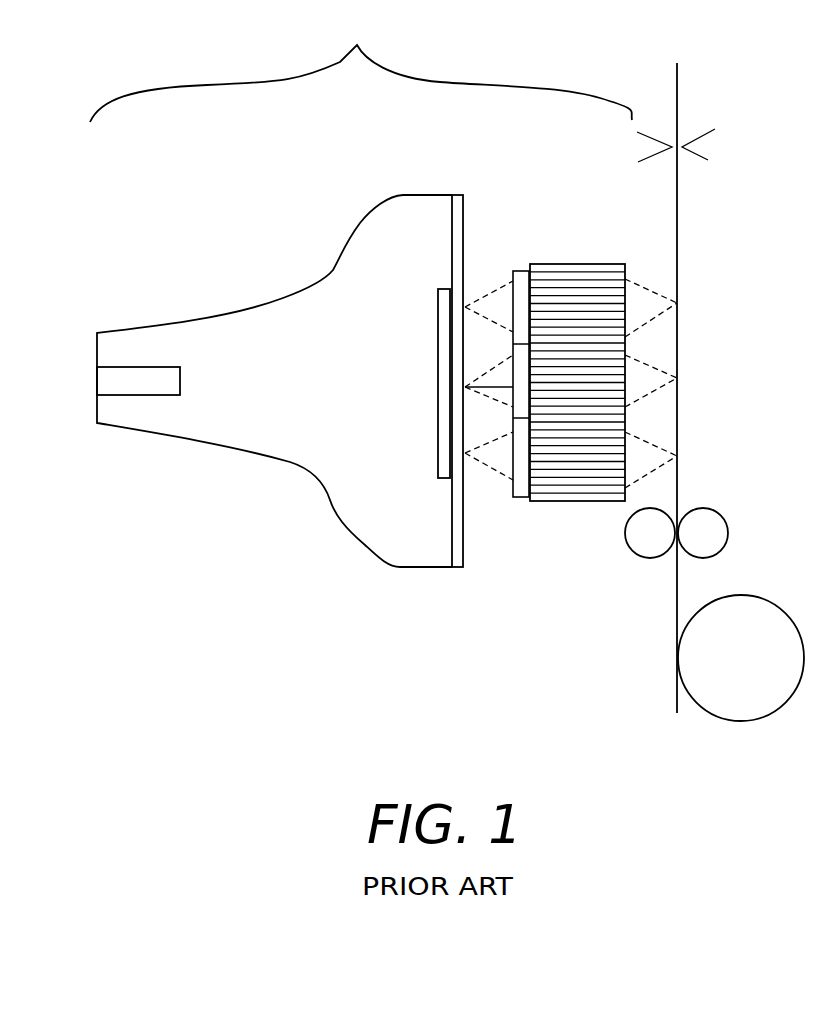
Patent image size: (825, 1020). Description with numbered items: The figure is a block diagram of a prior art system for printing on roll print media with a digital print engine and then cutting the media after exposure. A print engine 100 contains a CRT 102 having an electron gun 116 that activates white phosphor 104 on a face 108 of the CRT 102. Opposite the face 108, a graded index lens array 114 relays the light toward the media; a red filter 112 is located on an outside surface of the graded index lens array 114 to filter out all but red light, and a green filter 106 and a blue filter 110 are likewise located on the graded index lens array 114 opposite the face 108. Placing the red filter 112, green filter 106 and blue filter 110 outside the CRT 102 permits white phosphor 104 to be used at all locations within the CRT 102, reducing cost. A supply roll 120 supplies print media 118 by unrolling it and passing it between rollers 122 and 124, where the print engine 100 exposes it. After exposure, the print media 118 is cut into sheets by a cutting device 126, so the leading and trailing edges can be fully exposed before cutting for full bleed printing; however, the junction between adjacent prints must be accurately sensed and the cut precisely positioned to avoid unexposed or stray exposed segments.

The print engine 100 is at (361, 68).
The CRT 102 is at (318, 283).
The white phosphor 104 is at (437, 320).
The green filter 106 is at (472, 404).
The face 108 is at (455, 195).
The blue filter 110 is at (513, 456).
The red filter 112 is at (513, 290).
The graded index lens array 114 is at (550, 264).
The electron gun 116 is at (181, 385).
The print media 118 is at (678, 339).
The supply roll 120 is at (693, 703).
The roller 122 is at (728, 527).
The roller 124 is at (624, 540).
The cutting device 126 is at (708, 158).